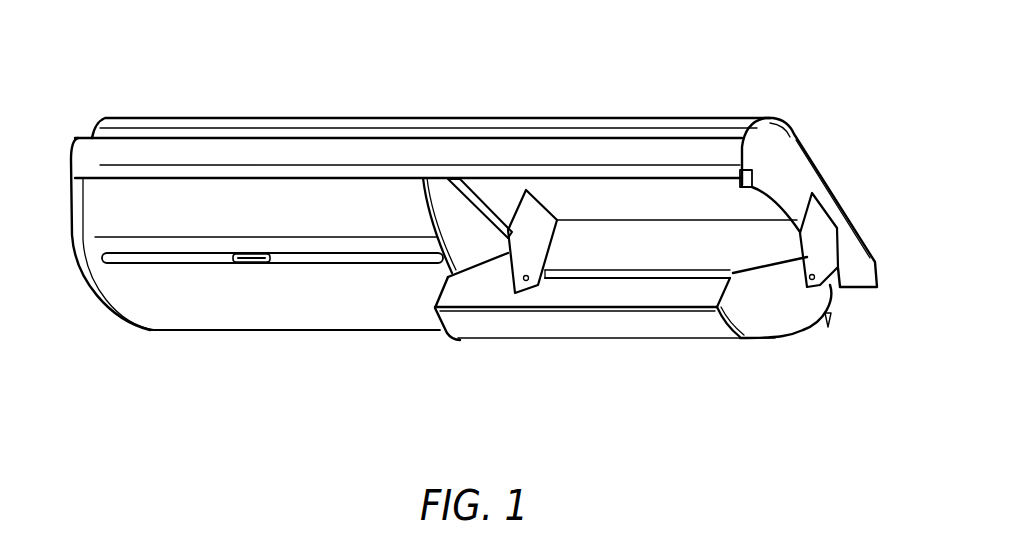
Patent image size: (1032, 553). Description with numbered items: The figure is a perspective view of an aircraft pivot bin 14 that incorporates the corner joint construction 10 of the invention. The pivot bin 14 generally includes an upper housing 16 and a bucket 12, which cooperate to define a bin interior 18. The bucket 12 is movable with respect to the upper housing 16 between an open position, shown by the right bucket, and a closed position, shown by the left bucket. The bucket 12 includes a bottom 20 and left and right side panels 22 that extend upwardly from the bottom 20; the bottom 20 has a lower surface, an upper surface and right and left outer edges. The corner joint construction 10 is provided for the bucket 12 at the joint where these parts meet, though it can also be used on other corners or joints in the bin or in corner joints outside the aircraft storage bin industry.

The corner joint construction 10 is at (720, 308).
The bucket 12 is at (608, 323).
The aircraft pivot bin 14 is at (828, 89).
The upper housing 16 is at (773, 138).
The bin interior 18 is at (570, 295).
The bottom 20 is at (555, 338).
The side panels 22 is at (453, 296).